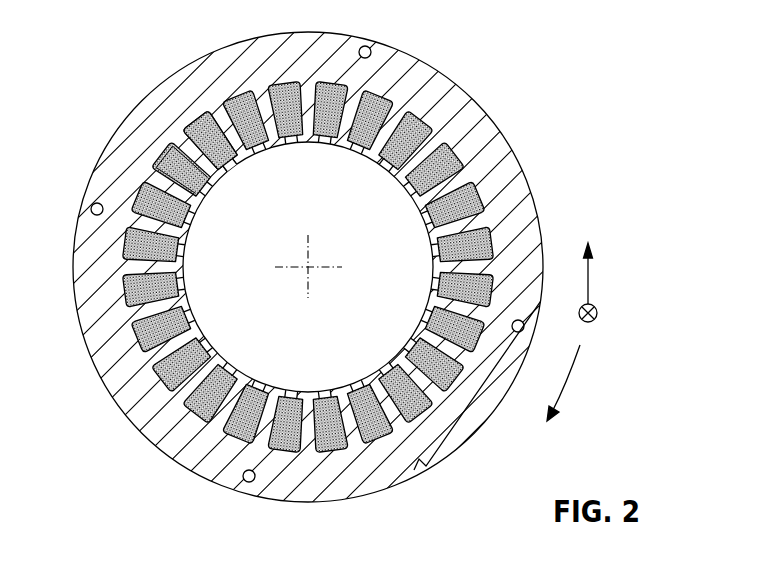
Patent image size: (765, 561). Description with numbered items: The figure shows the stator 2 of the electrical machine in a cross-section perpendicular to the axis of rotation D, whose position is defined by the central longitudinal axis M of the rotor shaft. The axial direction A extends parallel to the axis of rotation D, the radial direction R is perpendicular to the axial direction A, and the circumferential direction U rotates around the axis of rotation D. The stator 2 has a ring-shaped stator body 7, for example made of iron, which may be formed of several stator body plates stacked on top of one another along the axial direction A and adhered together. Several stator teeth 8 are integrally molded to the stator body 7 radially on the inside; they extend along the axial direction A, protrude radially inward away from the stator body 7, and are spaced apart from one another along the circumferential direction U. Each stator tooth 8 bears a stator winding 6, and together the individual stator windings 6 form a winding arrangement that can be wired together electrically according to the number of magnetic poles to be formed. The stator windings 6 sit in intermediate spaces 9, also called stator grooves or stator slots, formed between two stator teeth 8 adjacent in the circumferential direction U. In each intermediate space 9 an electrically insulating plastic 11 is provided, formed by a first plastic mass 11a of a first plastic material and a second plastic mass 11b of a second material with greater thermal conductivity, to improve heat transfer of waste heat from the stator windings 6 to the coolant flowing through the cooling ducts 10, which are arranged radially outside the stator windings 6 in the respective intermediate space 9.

The stator 2 is at (577, 127).
The stator winding 6 is at (182, 120).
The stator body 7 is at (448, 88).
The stator tooth 8 is at (218, 173).
The intermediate space 9 is at (298, 171).
The cooling duct 10 is at (196, 123).
The electrically insulating plastic 11 is at (298, 171).
The first plastic mass 11a is at (298, 171).
The second plastic mass 11b is at (257, 143).
The central longitudinal axis M is at (335, 289).
The axis of rotation D is at (316, 276).
The radial direction R is at (590, 280).
The axial direction A is at (598, 317).
The circumferential direction U is at (572, 373).